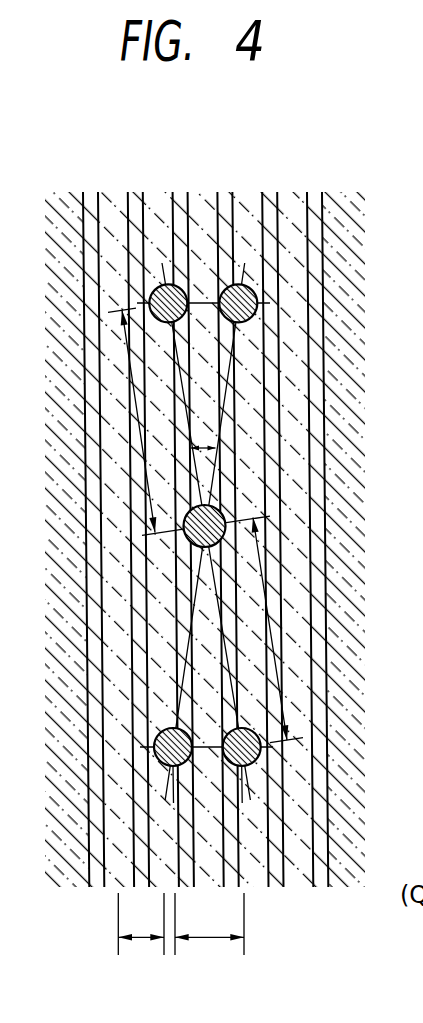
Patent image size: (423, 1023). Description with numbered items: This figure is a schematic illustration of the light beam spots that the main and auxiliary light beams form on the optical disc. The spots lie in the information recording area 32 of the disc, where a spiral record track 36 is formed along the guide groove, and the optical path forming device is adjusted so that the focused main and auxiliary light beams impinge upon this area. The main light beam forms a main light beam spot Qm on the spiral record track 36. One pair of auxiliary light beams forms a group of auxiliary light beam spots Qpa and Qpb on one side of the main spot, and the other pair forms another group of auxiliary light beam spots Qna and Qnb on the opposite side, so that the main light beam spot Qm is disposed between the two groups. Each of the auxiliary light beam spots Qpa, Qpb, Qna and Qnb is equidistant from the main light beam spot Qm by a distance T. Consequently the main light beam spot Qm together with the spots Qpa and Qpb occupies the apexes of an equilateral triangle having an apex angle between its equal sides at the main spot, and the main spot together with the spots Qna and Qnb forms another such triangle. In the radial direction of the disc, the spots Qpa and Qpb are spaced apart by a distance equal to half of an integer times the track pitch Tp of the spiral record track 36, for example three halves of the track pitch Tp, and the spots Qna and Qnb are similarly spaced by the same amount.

The spiral record track 36 is at (247, 197).
The information recording area 32 is at (293, 170).
The auxiliary light beam spot Qpa is at (157, 285).
The auxiliary light beam spot Qpb is at (256, 288).
The main light beam spot Qm is at (220, 509).
The auxiliary light beam spot Qna is at (159, 734).
The auxiliary light beam spot Qnb is at (255, 761).
The distance T is at (141, 440).
The track pitch Tp is at (140, 940).